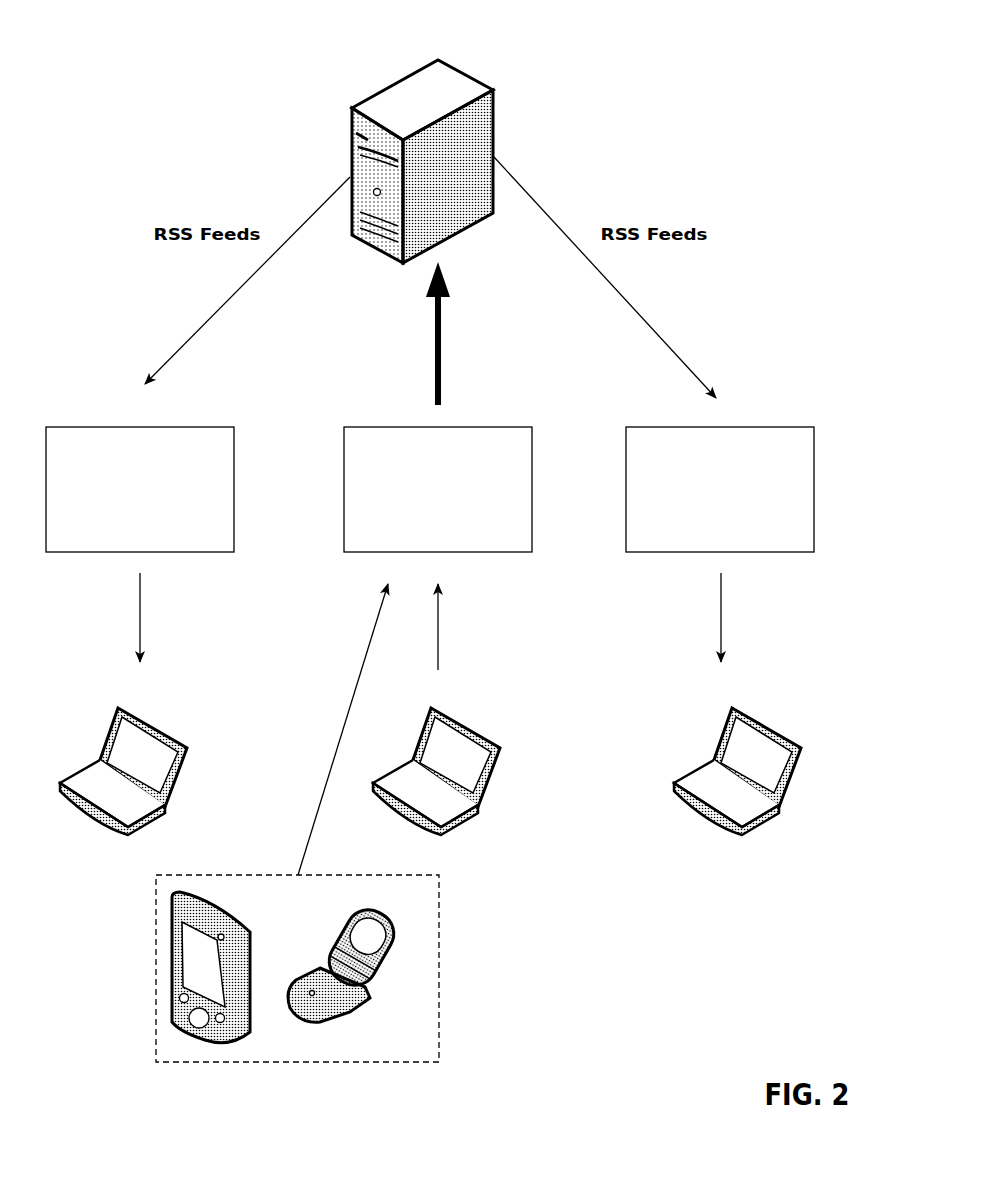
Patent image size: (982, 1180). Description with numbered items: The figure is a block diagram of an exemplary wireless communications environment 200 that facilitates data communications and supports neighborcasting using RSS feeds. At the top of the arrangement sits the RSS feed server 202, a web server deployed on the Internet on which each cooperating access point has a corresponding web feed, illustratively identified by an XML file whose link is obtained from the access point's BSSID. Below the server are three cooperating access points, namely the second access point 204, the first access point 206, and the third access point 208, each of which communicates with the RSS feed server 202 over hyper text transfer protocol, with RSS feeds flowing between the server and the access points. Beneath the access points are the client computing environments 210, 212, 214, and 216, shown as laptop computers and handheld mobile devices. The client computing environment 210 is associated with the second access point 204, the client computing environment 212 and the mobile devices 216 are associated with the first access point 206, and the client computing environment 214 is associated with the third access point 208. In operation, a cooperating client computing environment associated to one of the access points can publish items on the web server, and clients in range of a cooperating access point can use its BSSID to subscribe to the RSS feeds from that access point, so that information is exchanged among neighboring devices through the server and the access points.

The wireless communications environment 200 is at (650, 93).
The RSS feed server 202 is at (414, 68).
The access point-2 204 is at (202, 427).
The access point-1 206 is at (487, 427).
The access point-3 208 is at (770, 427).
The client computing environment 210 is at (172, 733).
The client computing environment 212 is at (472, 723).
The client computing environment 214 is at (765, 720).
The client computing environment 216 is at (438, 968).